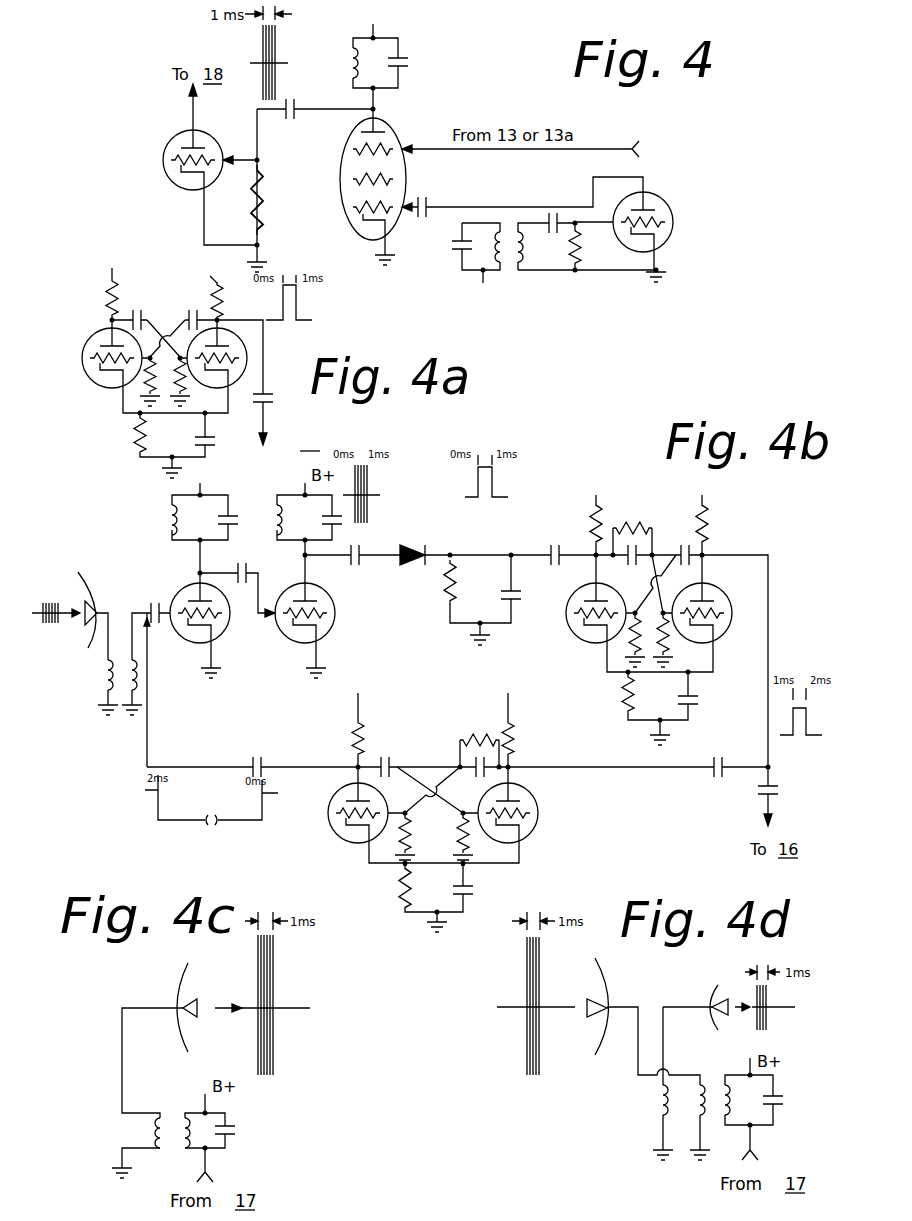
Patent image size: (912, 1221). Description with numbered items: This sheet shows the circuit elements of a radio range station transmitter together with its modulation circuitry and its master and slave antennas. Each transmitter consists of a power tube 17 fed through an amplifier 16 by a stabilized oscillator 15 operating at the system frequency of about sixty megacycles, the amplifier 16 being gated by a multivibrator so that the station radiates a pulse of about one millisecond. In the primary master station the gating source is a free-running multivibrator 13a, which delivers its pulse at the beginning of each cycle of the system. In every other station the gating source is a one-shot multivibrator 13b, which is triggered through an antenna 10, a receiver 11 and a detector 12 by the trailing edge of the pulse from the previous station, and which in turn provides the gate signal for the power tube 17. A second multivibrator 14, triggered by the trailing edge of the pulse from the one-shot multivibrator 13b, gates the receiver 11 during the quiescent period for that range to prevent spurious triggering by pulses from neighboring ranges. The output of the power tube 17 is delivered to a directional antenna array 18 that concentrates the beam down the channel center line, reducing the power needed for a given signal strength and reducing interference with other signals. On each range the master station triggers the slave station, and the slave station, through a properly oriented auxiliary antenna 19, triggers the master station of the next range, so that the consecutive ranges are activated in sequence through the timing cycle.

In FIG. 4B, the antenna 10 is at (88, 592).
In FIG. 4B, the receiver 11 is at (252, 648).
In FIG. 4B, the detector 12 is at (460, 543).
In FIG. 4A, the free-running multivibrator 13a is at (201, 362).
In FIG. 4B, the one-shot multivibrator 13b is at (665, 518).
In FIG. 4B, the second multivibrator 14 is at (563, 848).
In FIG. 4, the stabilized oscillator 15 is at (708, 231).
In FIG. 4, the amplifier 16 is at (430, 121).
In FIG. 4, the power tube 17 is at (240, 123).
In FIG. 4C, the directional antenna array 18 is at (230, 1050).
In FIG. 4D, the directional antenna array 18 is at (585, 1050).
In FIG. 4D, the auxiliary antenna 19 is at (738, 1050).